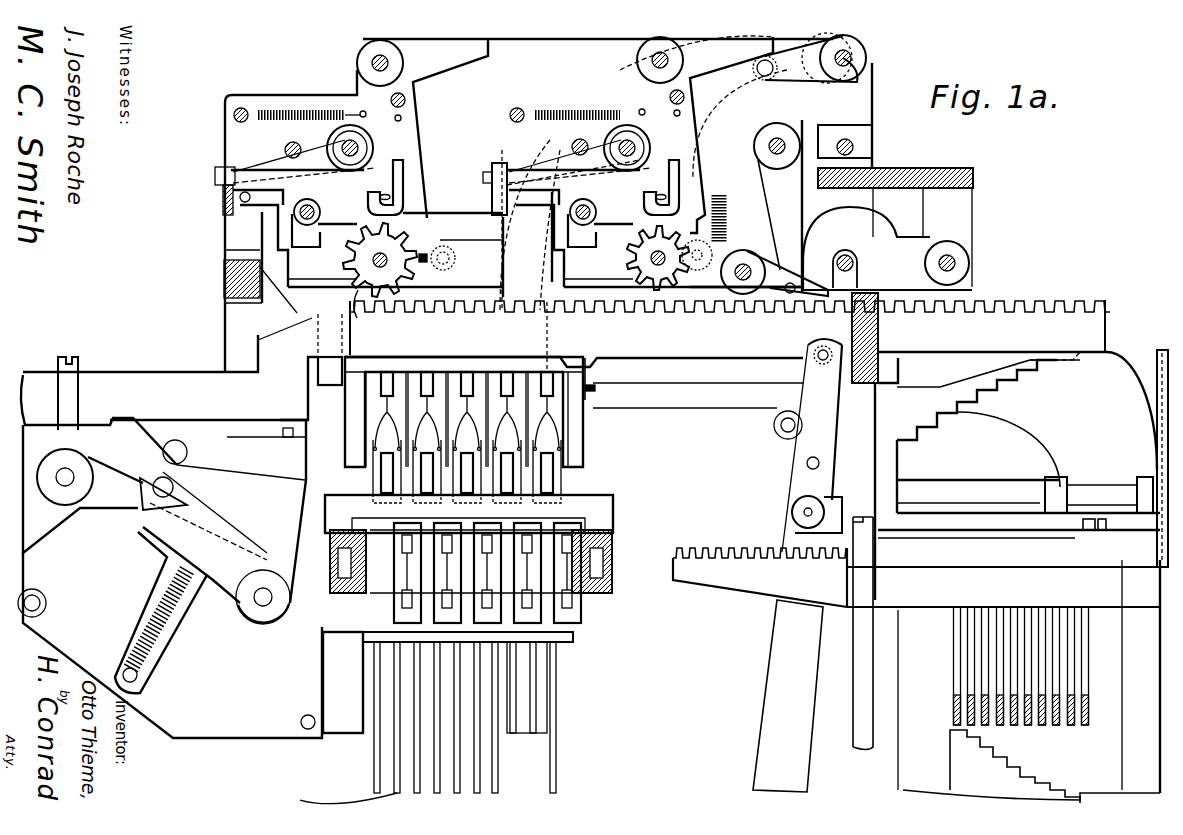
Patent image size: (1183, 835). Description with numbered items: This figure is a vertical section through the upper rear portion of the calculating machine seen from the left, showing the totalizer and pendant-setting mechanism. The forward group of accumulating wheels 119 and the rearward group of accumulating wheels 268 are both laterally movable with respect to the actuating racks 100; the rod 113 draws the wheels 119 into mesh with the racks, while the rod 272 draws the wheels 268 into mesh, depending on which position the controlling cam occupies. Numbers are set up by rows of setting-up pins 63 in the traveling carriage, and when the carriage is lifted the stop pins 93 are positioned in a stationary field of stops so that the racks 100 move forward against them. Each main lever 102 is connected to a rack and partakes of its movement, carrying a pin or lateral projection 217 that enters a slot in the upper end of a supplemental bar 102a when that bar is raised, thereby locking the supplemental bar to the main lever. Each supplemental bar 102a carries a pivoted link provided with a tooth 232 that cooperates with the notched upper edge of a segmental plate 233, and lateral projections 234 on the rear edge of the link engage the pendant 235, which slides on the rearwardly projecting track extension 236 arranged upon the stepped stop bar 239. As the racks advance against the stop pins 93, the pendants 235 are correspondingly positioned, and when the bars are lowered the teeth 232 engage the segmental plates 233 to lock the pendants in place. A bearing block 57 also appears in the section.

The accumulating wheels 119 is at (356, 337).
The rod 113 is at (493, 296).
The rod 272 is at (600, 300).
The accumulating wheels 268 is at (662, 305).
The actuating racks 100 is at (727, 354).
The stop pins 93 is at (550, 440).
The bearing block 57 is at (585, 573).
The setting-up pins 63 is at (538, 614).
The main levers 102 is at (805, 443).
The pins or lateral projections 217 is at (806, 466).
The stepped stop bar 239 is at (974, 436).
The track extension 236 is at (975, 475).
The tooth 232 is at (855, 548).
The pendant 235 is at (1092, 528).
The lateral projections 234 is at (1102, 532).
The segmental plate 233 is at (760, 577).
The supplemental bars 102a is at (778, 667).